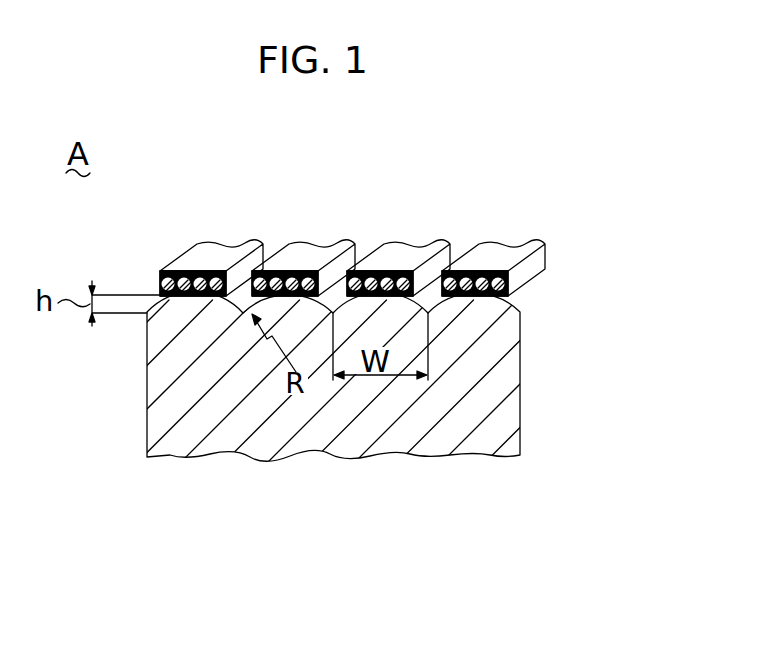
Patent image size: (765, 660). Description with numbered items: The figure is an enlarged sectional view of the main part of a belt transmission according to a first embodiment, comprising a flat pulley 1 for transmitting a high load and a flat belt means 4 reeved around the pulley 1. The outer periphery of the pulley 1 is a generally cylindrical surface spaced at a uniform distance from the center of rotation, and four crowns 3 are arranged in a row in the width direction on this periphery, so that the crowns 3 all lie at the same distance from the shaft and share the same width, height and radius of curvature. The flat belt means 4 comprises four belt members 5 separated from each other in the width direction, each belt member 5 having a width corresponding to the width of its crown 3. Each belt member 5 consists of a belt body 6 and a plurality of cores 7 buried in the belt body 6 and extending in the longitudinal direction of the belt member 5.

The flat pulley 1 is at (147, 417).
The crown 3 is at (193, 270).
The flat belt means 4 is at (370, 239).
The belt member 5 is at (246, 256).
The belt body 6 is at (169, 281).
The core 7 is at (160, 274).